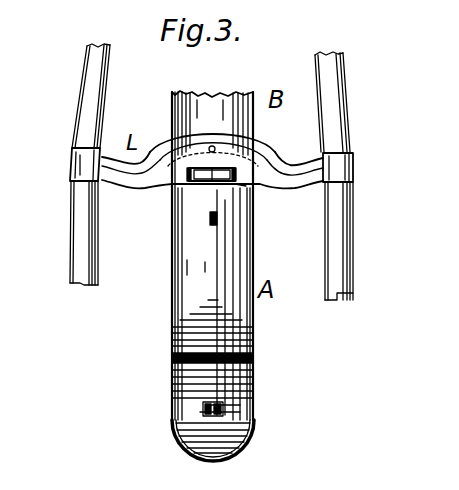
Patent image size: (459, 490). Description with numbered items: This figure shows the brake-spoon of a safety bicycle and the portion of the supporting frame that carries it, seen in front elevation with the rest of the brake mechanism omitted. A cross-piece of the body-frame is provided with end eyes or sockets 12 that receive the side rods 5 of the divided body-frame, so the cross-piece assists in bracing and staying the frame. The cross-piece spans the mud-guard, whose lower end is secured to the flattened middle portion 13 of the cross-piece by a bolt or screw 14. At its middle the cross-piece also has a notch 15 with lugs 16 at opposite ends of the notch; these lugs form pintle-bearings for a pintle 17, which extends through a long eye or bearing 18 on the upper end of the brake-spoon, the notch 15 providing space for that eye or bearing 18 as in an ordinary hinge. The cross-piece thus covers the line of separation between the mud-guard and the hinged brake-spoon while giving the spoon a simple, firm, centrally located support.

The side rods 5 is at (212, 172).
The end eyes or sockets 12 is at (214, 165).
The flattened middle portion 13 is at (212, 161).
The bolt or screw 14 is at (215, 149).
The notch 15 is at (206, 168).
The lugs 16 is at (187, 184).
The pintle 17 is at (237, 168).
The long eye or bearing 18 is at (194, 184).